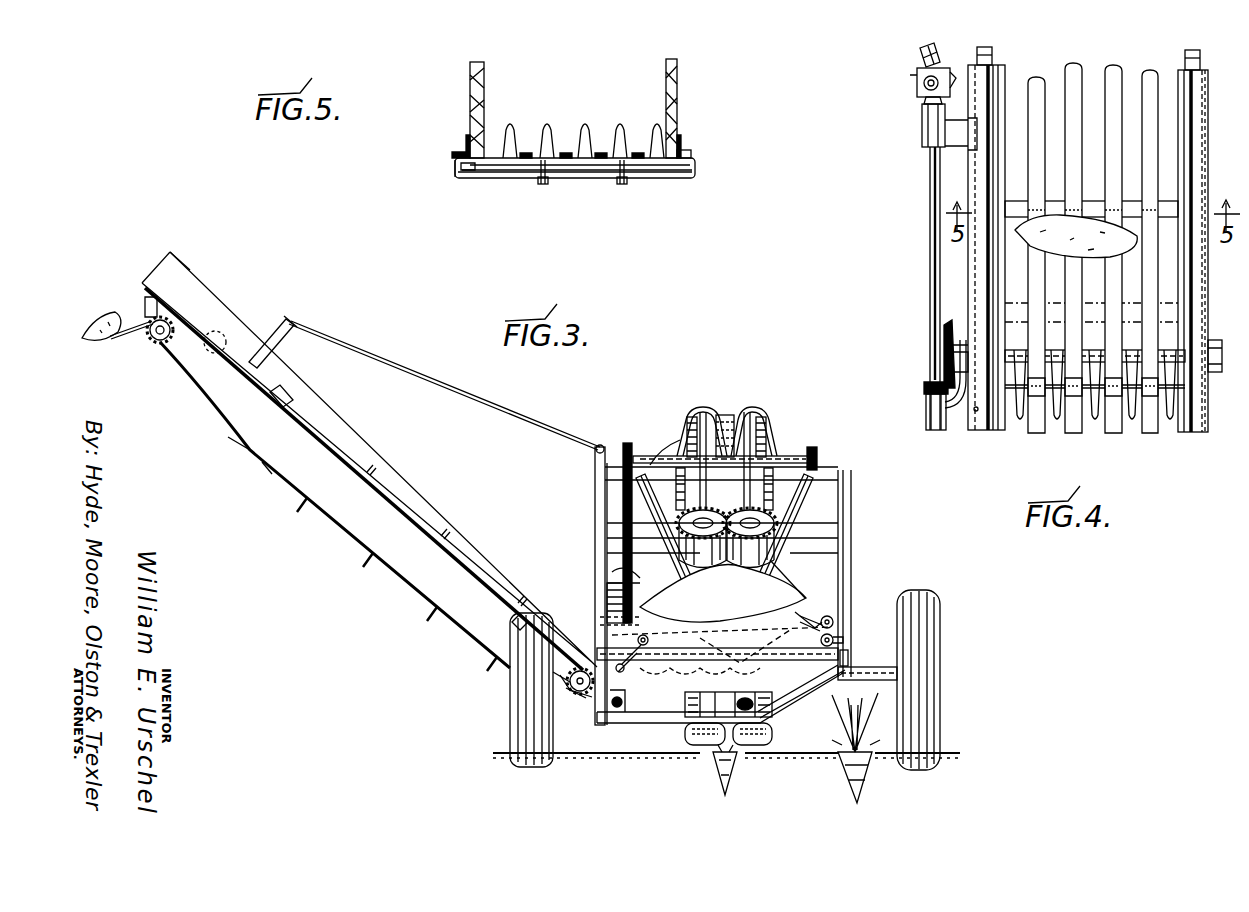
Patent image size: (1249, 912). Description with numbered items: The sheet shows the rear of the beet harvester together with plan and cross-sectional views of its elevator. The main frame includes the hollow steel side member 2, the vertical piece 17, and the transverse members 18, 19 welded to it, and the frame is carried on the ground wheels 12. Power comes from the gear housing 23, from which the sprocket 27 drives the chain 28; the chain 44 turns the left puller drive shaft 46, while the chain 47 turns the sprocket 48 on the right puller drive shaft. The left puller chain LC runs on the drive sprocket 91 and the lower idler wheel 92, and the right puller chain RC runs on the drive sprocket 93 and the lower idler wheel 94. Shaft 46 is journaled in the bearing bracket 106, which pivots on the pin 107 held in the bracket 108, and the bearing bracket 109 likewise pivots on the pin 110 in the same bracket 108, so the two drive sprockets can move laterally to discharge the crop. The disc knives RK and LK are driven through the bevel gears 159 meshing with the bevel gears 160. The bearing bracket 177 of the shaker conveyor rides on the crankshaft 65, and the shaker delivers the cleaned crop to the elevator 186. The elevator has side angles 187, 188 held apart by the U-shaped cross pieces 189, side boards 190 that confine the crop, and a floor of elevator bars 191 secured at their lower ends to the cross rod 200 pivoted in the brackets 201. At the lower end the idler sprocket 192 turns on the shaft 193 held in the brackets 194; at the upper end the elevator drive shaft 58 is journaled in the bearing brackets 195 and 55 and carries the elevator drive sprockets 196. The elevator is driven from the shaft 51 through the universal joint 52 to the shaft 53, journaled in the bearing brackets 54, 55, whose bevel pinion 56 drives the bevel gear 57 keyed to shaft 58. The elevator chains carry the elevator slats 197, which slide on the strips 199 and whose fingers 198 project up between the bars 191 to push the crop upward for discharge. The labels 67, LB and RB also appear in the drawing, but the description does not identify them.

In FIG. 3, the hollow steel side member 2 is at (849, 660).
In FIG. 3, the ground wheel 12 is at (513, 712).
In FIG. 3, the vertical piece 17 is at (600, 592).
In FIG. 3, the transverse member 18 is at (786, 697).
In FIG. 3, the transverse member 19 is at (838, 700).
In FIG. 3, the gear housing 23 is at (616, 592).
In FIG. 3, the sprocket 27 is at (690, 638).
In FIG. 3, the chain 28 is at (625, 541).
In FIG. 3, the chain 44 is at (680, 441).
In FIG. 3, the left puller drive shaft 46 is at (702, 408).
In FIG. 3, the chain 47 is at (770, 432).
In FIG. 3, the sprocket 48 is at (766, 412).
In FIG. 4, the shaft 51 is at (921, 53).
In FIG. 4, the universal joint 52 is at (917, 85).
In FIG. 4, the shaft 53 is at (931, 208).
In FIG. 4, the bearing bracket 54 is at (922, 132).
In FIG. 4, the bearing bracket 55 is at (956, 420).
In FIG. 4, the bevel pinion 56 is at (926, 382).
In FIG. 4, the bevel gear 57 is at (946, 335).
In FIG. 4, the elevator drive shaft 58 is at (1019, 420).
In FIG. 3, the elevator drive shaft 58 is at (156, 345).
In FIG. 3, the crankshaft 65 is at (834, 623).
In FIG. 3, the roller 67 is at (834, 641).
In FIG. 3, the drive sprocket 91 is at (636, 524).
In FIG. 3, the lower idler wheel 92 is at (700, 746).
In FIG. 3, the drive sprocket 93 is at (795, 528).
In FIG. 3, the lower idler wheel 94 is at (752, 746).
In FIG. 3, the bearing bracket 106 is at (682, 452).
In FIG. 3, the pin 107 is at (707, 420).
In FIG. 3, the bracket 108 is at (728, 415).
In FIG. 3, the bearing bracket 109 is at (772, 451).
In FIG. 3, the pin 110 is at (749, 420).
In FIG. 3, the bevel gear 159 is at (627, 483).
In FIG. 3, the bevel gear 160 is at (632, 447).
In FIG. 3, the bearing bracket 177 is at (830, 615).
In FIG. 3, the elevator 186 is at (334, 538).
In FIG. 5, the side angle 187 is at (681, 140).
In FIG. 4, the side angle 187 is at (1203, 104).
In FIG. 3, the side angle 187 is at (143, 305).
In FIG. 5, the side angle 188 is at (467, 148).
In FIG. 4, the side angle 188 is at (968, 236).
In FIG. 5, the U-shaped cross piece 189 is at (481, 178).
In FIG. 4, the U-shaped cross piece 189 is at (1172, 312).
In FIG. 3, the U-shaped cross piece 189 is at (184, 380).
In FIG. 5, the side board 190 is at (679, 85).
In FIG. 4, the side board 190 is at (1200, 150).
In FIG. 3, the side board 190 is at (178, 273).
In FIG. 5, the elevator bar 191 is at (567, 150).
In FIG. 4, the elevator bar 191 is at (1103, 76).
In FIG. 3, the elevator bar 191 is at (112, 340).
In FIG. 5, the idler sprocket 192 is at (690, 160).
In FIG. 4, the idler sprocket 192 is at (1192, 56).
In FIG. 3, the idler sprocket 192 is at (268, 476).
In FIG. 5, the shaft 193 is at (458, 169).
In FIG. 4, the shaft 193 is at (990, 57).
In FIG. 3, the shaft 193 is at (573, 689).
In FIG. 3, the bracket 194 is at (581, 695).
In FIG. 4, the bearing bracket 195 is at (1216, 376).
In FIG. 3, the bearing bracket 195 is at (262, 330).
In FIG. 3, the elevator drive sprocket 196 is at (147, 320).
In FIG. 5, the elevator slat 197 is at (588, 166).
In FIG. 4, the elevator slat 197 is at (1056, 420).
In FIG. 3, the elevator slat 197 is at (238, 441).
In FIG. 5, the finger 198 is at (620, 126).
In FIG. 5, the strip 199 is at (626, 185).
In FIG. 3, the cross rod 200 is at (620, 706).
In FIG. 3, the bracket 201 is at (614, 710).
In FIG. 3, the left disc knife LK is at (641, 584).
In FIG. 3, the right disc knife RK is at (820, 598).
In FIG. 3, the left blade LB is at (712, 616).
In FIG. 3, the right blade RB is at (790, 566).
In FIG. 3, the left puller chain LC is at (685, 702).
In FIG. 3, the right puller chain RC is at (780, 732).